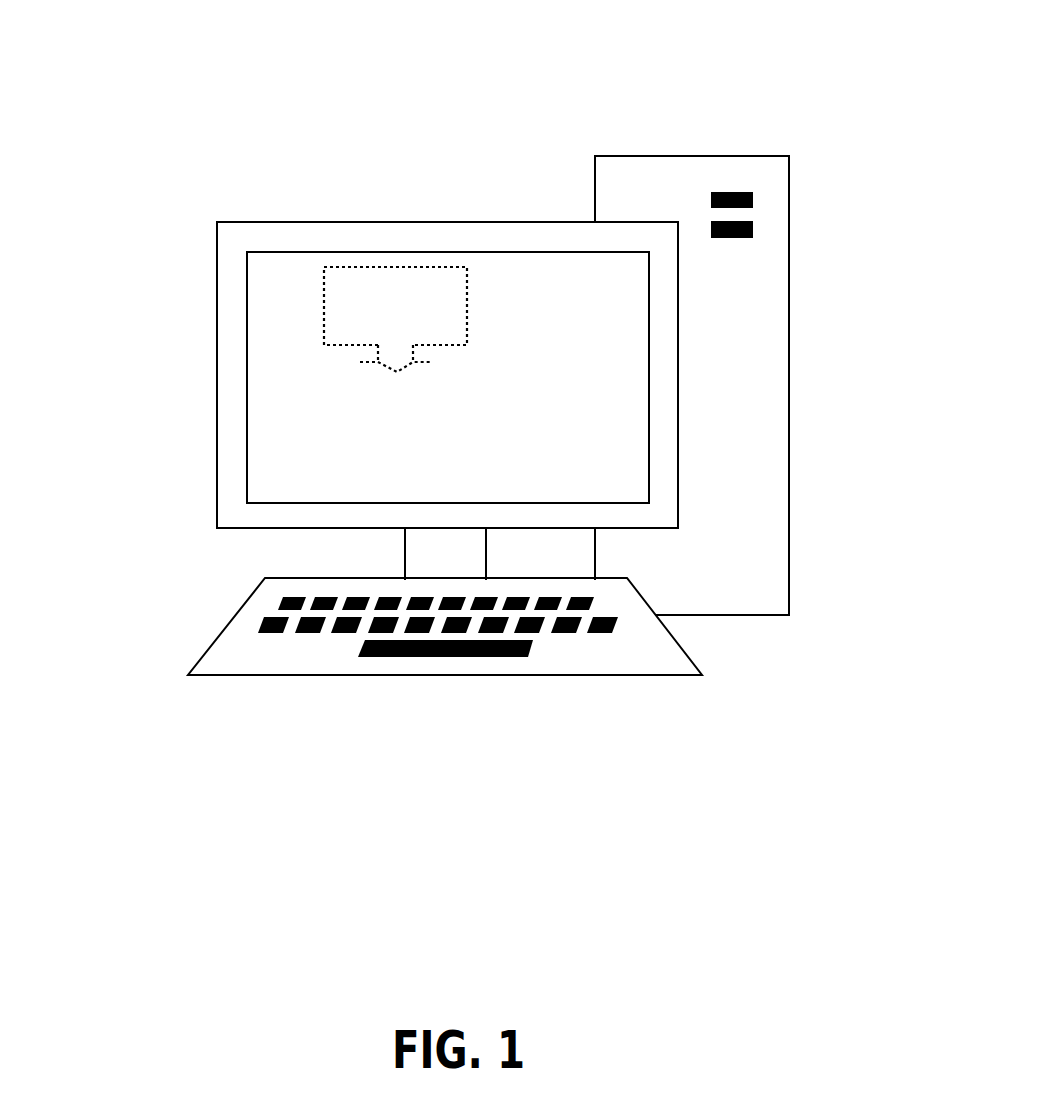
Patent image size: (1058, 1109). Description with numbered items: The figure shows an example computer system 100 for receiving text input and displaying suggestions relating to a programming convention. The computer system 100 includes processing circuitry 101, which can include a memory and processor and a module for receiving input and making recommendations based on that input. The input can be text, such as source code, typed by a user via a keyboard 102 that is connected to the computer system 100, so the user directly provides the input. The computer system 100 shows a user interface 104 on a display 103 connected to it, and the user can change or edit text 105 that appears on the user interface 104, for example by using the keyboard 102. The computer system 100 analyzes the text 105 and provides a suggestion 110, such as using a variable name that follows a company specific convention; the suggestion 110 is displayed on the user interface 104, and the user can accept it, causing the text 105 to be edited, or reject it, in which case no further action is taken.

The computer system 100 is at (488, 516).
The processing circuitry 101 is at (760, 372).
The keyboard 102 is at (313, 662).
The display 103 is at (354, 392).
The user interface 104 is at (346, 256).
The text 105 is at (303, 451).
The suggestion 110 is at (395, 319).